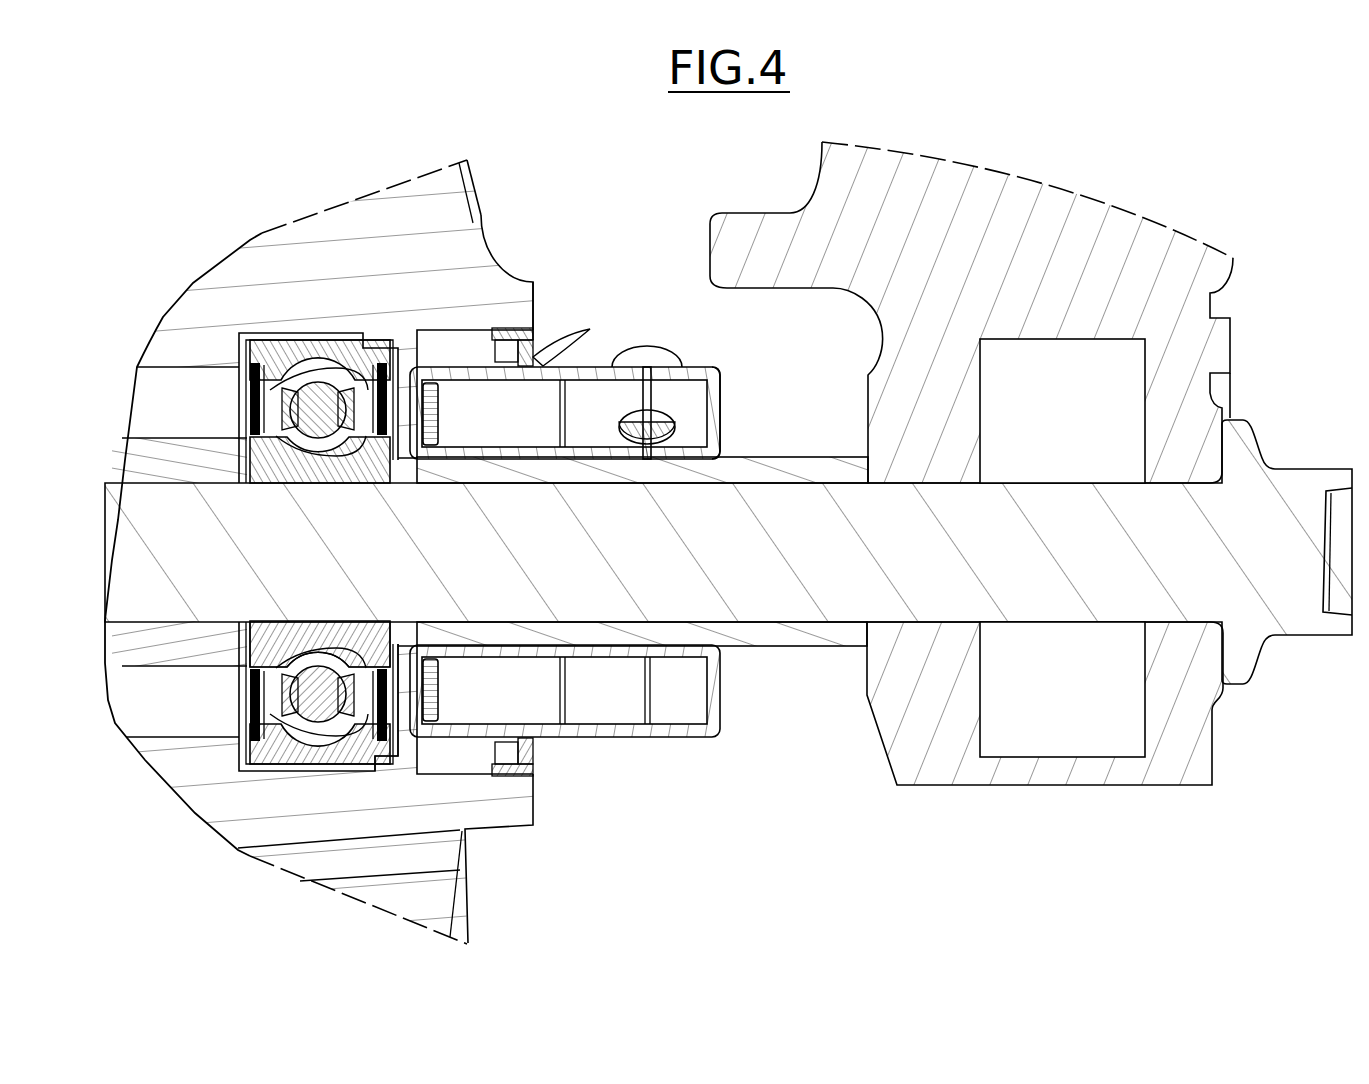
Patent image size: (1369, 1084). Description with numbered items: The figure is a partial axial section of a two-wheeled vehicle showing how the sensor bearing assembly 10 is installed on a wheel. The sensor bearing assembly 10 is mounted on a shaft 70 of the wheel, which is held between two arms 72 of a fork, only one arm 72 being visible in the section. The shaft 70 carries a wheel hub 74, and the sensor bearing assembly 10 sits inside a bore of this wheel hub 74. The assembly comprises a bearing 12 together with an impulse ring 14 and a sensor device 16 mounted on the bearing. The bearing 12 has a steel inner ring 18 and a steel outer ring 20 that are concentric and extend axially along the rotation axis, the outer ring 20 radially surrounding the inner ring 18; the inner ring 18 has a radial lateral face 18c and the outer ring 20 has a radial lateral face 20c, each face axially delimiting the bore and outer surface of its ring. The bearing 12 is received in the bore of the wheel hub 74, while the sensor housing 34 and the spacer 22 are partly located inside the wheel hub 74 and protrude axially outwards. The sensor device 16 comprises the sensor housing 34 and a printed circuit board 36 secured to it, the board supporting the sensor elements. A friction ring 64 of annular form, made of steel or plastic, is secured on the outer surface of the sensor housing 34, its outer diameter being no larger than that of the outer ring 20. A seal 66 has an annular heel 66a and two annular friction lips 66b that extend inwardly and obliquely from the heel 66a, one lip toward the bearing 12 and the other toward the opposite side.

The sensor bearing assembly 10 is at (580, 493).
The bearing 12 is at (246, 399).
The impulse ring 14 is at (417, 740).
The sensor device 16 is at (692, 348).
The inner ring 18 is at (258, 468).
The radial lateral face 18c is at (382, 720).
The outer ring 20 is at (250, 345).
The radial lateral face 20c is at (418, 745).
The spacer 22 is at (790, 464).
The sensor housing 34 is at (715, 373).
The printed circuit board 36 is at (434, 408).
The friction ring 64 is at (592, 351).
The seal 66 is at (539, 338).
The annular heel 66a is at (531, 330).
The friction lip 66b is at (577, 360).
The shaft 70 is at (771, 580).
The arm 72 is at (921, 773).
The wheel hub 74 is at (486, 236).